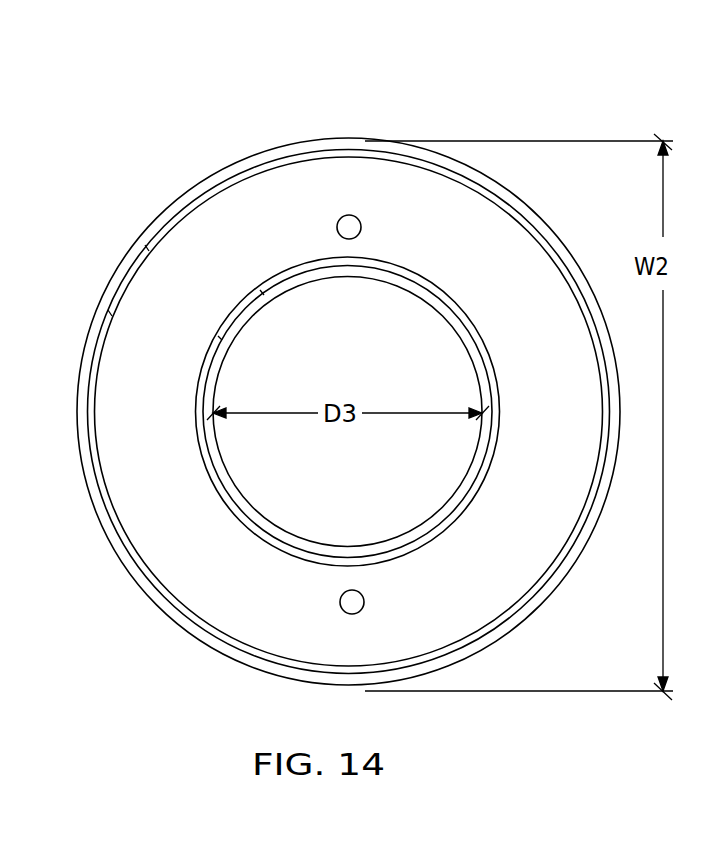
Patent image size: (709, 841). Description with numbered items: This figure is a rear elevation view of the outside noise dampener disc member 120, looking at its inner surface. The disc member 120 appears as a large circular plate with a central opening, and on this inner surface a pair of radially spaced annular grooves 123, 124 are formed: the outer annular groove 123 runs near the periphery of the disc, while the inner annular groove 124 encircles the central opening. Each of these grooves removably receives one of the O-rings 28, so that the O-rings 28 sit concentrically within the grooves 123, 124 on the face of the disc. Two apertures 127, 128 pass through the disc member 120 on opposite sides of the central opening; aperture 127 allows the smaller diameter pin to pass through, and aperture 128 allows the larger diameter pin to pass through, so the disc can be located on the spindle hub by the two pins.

The outside noise dampener disc member 120 is at (428, 108).
The O-rings 28 is at (213, 182).
The annular groove 123 is at (125, 280).
The annular groove 124 is at (237, 312).
The aperture 127 is at (340, 222).
The aperture 128 is at (343, 596).